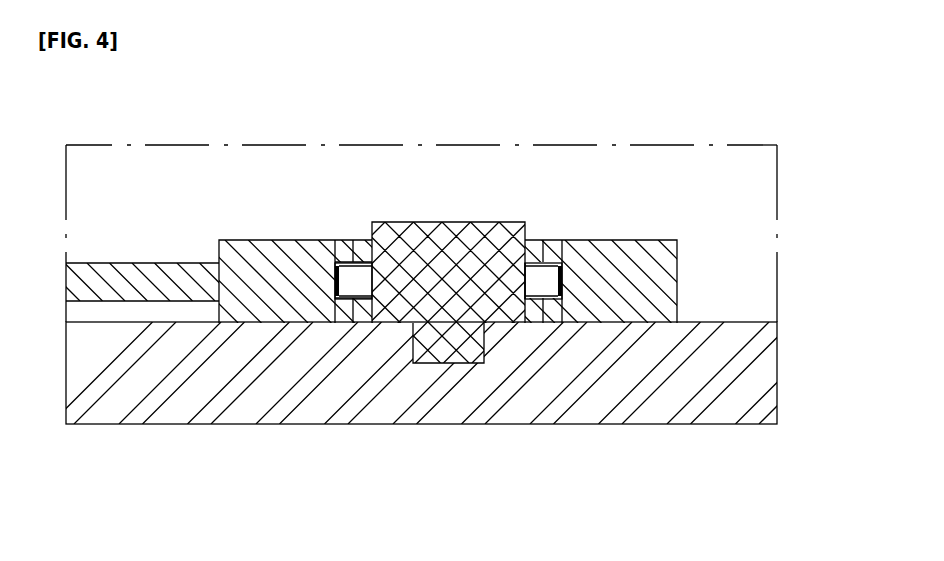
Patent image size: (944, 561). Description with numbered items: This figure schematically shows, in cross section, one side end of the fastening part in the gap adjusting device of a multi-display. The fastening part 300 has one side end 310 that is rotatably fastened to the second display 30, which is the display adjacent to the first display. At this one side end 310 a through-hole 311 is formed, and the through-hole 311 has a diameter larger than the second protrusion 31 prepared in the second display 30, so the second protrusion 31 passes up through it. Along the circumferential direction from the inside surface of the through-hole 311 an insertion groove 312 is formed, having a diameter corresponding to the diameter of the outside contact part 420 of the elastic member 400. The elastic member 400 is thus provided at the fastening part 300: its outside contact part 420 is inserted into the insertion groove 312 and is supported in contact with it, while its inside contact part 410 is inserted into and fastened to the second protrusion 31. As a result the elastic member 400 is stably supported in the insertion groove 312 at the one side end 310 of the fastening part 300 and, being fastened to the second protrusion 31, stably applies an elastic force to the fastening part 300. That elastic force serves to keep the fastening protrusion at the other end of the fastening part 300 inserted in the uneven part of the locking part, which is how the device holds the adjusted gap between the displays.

The second display 30 is at (733, 368).
The fastening part 300 is at (154, 245).
The one side end 310 is at (276, 248).
The through-hole 311 is at (358, 307).
The insertion groove 312 is at (337, 323).
The second protrusion 31 is at (487, 247).
The elastic member 400 is at (542, 287).
The inside contact part 410 is at (525, 285).
The outside contact part 420 is at (565, 280).